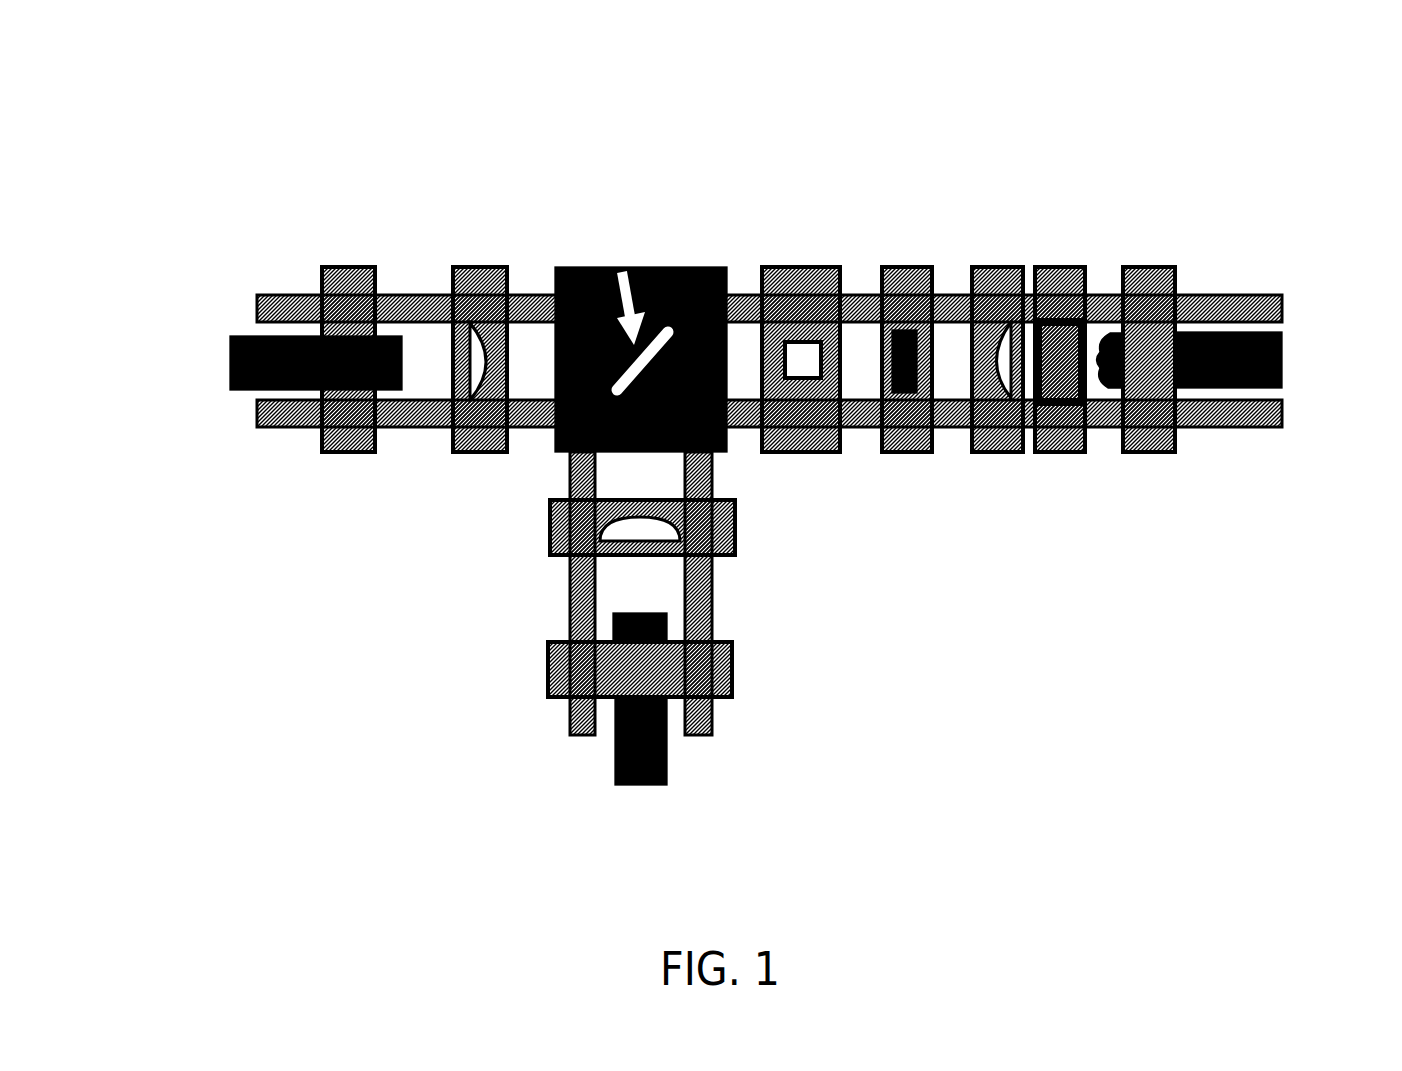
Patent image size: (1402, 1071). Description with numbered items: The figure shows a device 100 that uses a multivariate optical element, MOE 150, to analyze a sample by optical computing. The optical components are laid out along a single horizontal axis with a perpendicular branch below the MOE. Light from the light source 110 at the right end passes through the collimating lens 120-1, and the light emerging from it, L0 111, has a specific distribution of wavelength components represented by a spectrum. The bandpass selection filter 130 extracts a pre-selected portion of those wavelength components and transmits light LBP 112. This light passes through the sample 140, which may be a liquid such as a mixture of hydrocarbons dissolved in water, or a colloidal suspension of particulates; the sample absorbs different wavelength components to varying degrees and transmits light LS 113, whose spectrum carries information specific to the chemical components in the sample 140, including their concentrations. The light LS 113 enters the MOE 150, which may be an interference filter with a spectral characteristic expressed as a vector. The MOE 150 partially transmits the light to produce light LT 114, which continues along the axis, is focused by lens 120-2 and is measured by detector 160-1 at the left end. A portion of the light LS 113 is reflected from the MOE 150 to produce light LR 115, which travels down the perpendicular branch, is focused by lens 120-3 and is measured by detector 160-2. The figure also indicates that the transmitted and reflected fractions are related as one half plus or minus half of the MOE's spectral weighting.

The device 100 is at (341, 134).
The light source 110 is at (1240, 396).
The light L0 111 is at (963, 362).
The light LBP 112 is at (882, 362).
The light LS 113 is at (762, 362).
The light LT 114 is at (552, 362).
The light LR 115 is at (638, 452).
The collimating lens 120-1 is at (987, 315).
The lens 120-2 is at (482, 412).
The lens 120-3 is at (665, 540).
The bandpass selection filter 130 is at (921, 418).
The sample 140 is at (812, 412).
The multivariate optical element (MOE) 150 is at (593, 330).
The detector 160-1 is at (214, 361).
The detector 160-2 is at (682, 788).